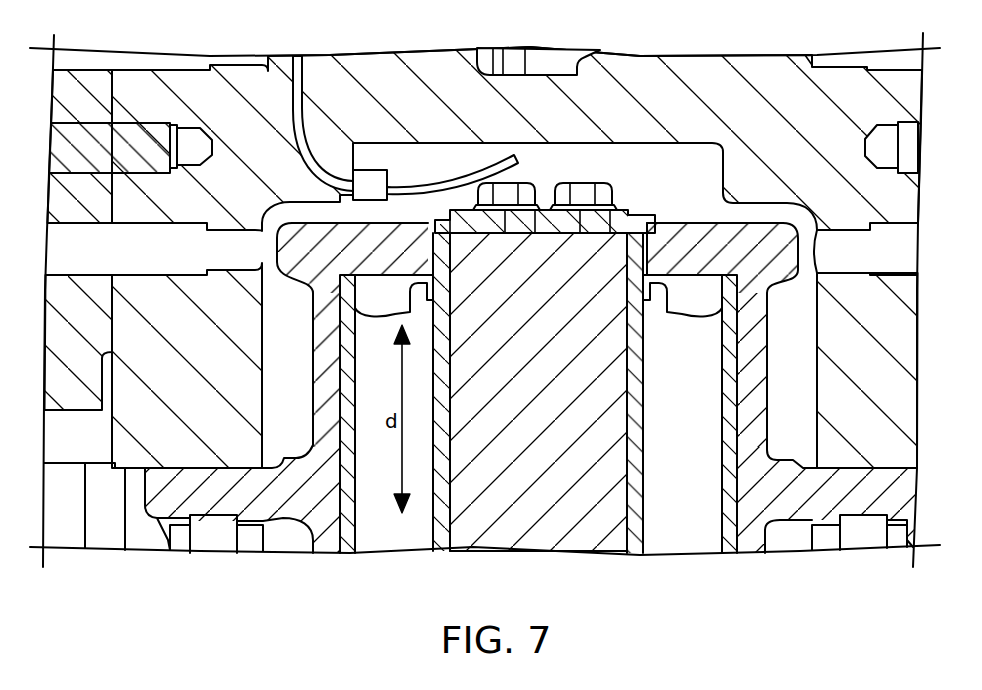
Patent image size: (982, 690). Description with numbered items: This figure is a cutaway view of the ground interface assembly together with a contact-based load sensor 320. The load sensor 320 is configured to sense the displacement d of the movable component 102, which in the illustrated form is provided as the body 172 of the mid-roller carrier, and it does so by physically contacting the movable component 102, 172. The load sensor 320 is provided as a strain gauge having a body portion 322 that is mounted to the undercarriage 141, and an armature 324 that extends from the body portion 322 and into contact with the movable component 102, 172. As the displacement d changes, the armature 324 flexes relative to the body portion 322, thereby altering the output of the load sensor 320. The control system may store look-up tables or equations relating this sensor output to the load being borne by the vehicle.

The undercarriage 141 is at (758, 80).
The contact-based load sensor 320 is at (405, 128).
The body portion 322 is at (381, 161).
The armature 324 is at (483, 170).
The movable component 102 is at (538, 410).
The body of the mid-roller carrier 172 is at (535, 472).